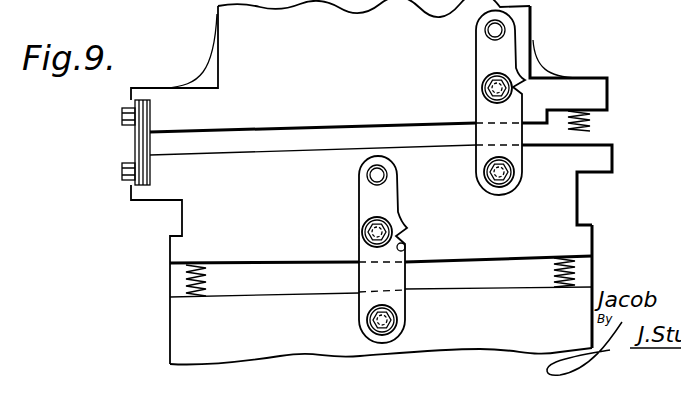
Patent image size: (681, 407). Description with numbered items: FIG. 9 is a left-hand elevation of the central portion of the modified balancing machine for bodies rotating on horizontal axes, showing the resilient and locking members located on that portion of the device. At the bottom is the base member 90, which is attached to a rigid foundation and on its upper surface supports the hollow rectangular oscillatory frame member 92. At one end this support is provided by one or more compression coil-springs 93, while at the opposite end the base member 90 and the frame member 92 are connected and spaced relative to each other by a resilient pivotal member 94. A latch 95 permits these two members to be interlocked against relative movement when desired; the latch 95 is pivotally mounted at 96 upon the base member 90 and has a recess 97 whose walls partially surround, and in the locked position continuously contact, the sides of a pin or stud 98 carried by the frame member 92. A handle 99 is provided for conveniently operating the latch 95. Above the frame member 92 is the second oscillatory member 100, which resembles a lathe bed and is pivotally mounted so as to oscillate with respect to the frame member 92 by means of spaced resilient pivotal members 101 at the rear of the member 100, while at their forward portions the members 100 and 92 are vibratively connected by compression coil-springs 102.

The base member 90 is at (182, 335).
The hollow rectangular oscillatory frame member 92 is at (371, 221).
The compression coil-springs 93 is at (531, 257).
The resilient pivotal member 94 is at (582, 266).
The latch 95 is at (400, 278).
The pivot of the latch 96 is at (390, 321).
The recess 97 is at (406, 248).
The pin or stud 98 is at (366, 236).
The handle 99 is at (369, 179).
The second oscillatory member 100 is at (369, 66).
The resilient pivotal members 101 is at (137, 144).
The compression coil-springs 102 is at (593, 127).